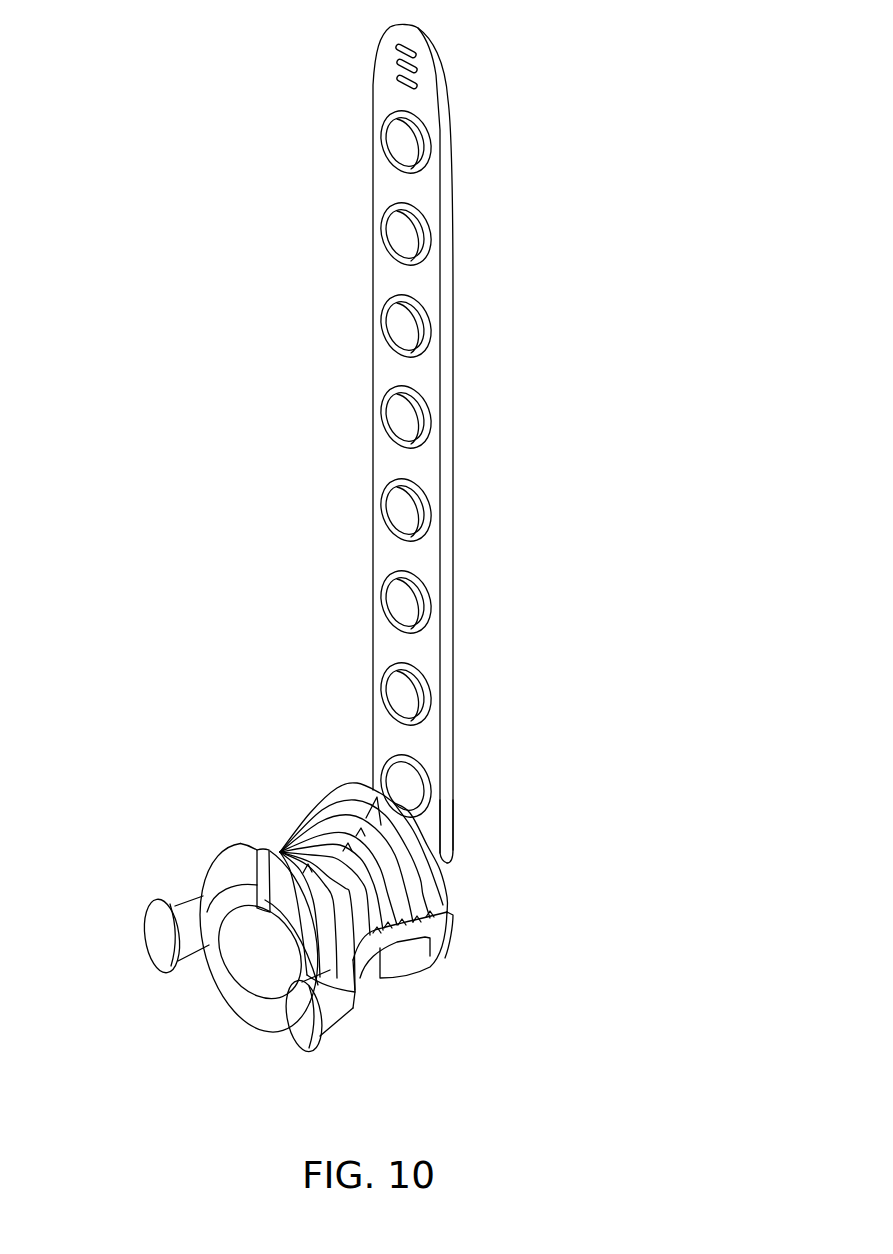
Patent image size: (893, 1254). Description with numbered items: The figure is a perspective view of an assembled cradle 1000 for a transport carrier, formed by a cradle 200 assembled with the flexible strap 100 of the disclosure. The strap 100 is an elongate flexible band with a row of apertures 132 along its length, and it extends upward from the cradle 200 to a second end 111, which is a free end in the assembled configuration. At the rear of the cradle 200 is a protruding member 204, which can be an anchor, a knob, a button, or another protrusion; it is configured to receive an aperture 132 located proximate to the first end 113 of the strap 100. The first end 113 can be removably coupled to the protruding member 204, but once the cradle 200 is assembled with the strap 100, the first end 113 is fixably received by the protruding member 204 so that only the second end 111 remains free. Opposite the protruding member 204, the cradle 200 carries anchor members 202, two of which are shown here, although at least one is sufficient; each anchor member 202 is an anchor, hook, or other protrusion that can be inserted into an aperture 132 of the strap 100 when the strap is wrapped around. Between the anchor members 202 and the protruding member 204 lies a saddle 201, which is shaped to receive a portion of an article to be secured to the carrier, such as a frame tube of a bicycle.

The assembled cradle 1000 is at (150, 236).
The flexible strap 100 is at (447, 239).
The second end 111 is at (383, 85).
The aperture 132 is at (409, 599).
The first end 113 is at (432, 830).
The cradle 200 is at (225, 872).
The saddle 201 is at (312, 813).
The anchor member 202 is at (160, 937).
The protruding member 204 is at (380, 775).